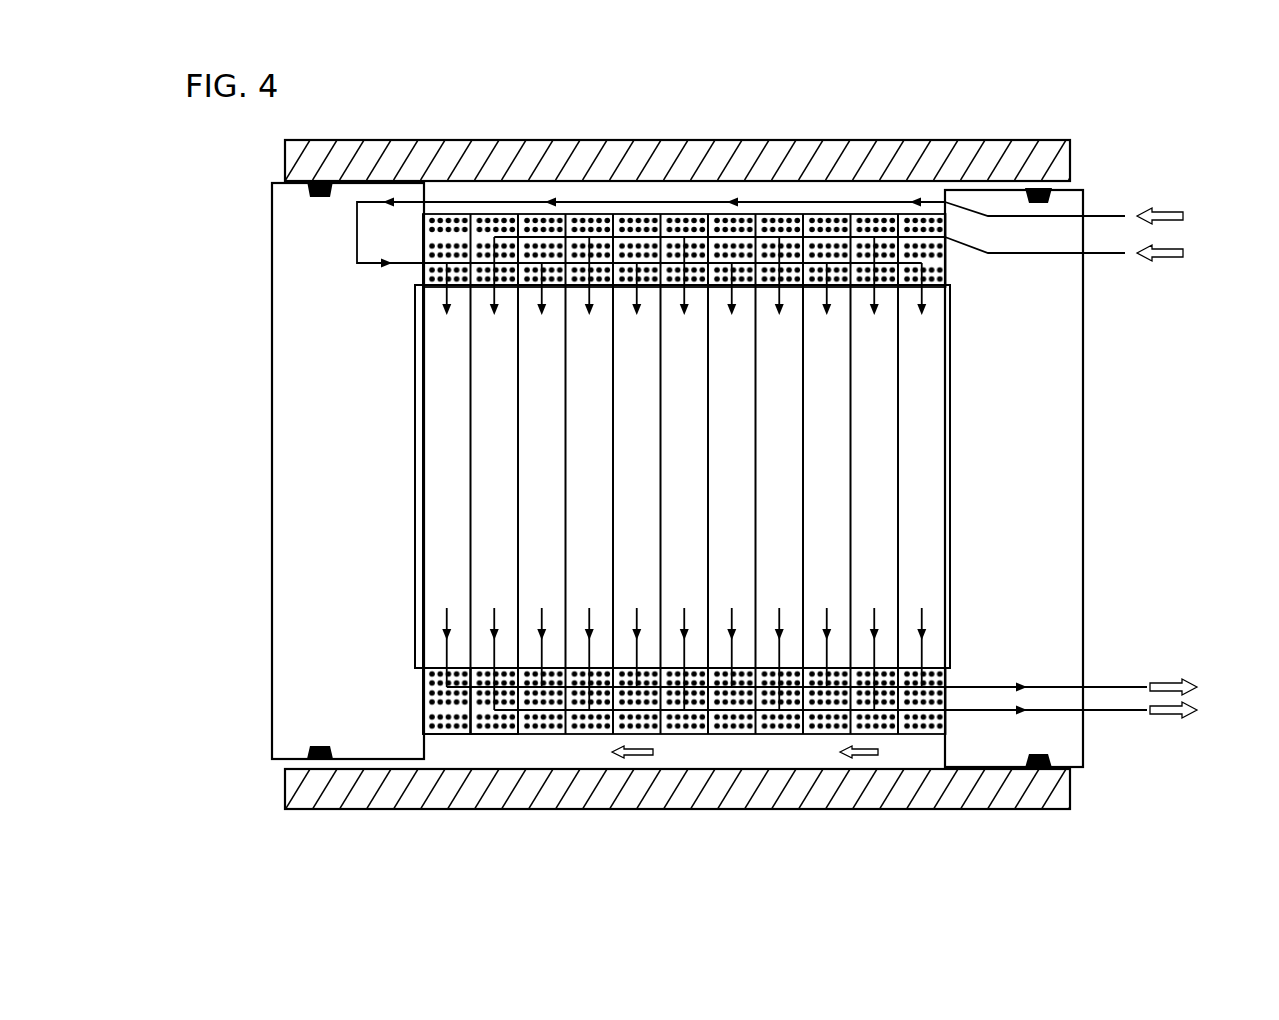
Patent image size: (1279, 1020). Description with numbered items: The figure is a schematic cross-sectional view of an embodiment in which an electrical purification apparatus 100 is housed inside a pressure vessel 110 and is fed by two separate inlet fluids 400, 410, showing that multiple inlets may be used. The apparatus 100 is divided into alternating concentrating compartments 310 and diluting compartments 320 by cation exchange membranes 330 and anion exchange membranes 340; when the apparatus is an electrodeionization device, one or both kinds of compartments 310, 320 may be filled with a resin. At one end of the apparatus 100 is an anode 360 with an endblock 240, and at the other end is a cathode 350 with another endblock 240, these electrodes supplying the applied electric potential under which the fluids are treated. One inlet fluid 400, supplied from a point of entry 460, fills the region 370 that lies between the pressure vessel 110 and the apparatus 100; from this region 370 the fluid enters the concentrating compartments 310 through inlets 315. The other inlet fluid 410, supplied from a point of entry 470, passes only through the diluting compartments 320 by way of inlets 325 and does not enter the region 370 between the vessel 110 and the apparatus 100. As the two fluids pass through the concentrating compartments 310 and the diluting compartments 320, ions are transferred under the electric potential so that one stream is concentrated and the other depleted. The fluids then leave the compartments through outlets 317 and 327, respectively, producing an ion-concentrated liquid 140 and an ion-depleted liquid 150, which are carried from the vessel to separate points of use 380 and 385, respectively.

The electrical purification apparatus 100 is at (237, 786).
The pressure vessel 110 is at (703, 140).
The ion-concentrated stream 140 is at (1100, 713).
The ion-depleted stream 150 is at (1100, 713).
The endblock 240 is at (262, 489).
The concentrating compartments 310 is at (464, 476).
The inlets 315 is at (447, 287).
The outlets 317 is at (447, 668).
The diluting compartments 320 is at (477, 476).
The inlets 325 is at (496, 287).
The outlets 327 is at (494, 668).
The cation exchange membranes 330 is at (467, 734).
The anion exchange membranes 340 is at (518, 734).
The cathode 350 is at (410, 420).
The anode 360 is at (957, 561).
The region 370 is at (870, 197).
The point of use 380 is at (1163, 685).
The point of use 385 is at (1165, 722).
The inlet fluid 400 is at (1057, 213).
The inlet fluid 410 is at (1060, 255).
The point of entry 460 is at (1178, 208).
The point of entry 470 is at (1165, 262).